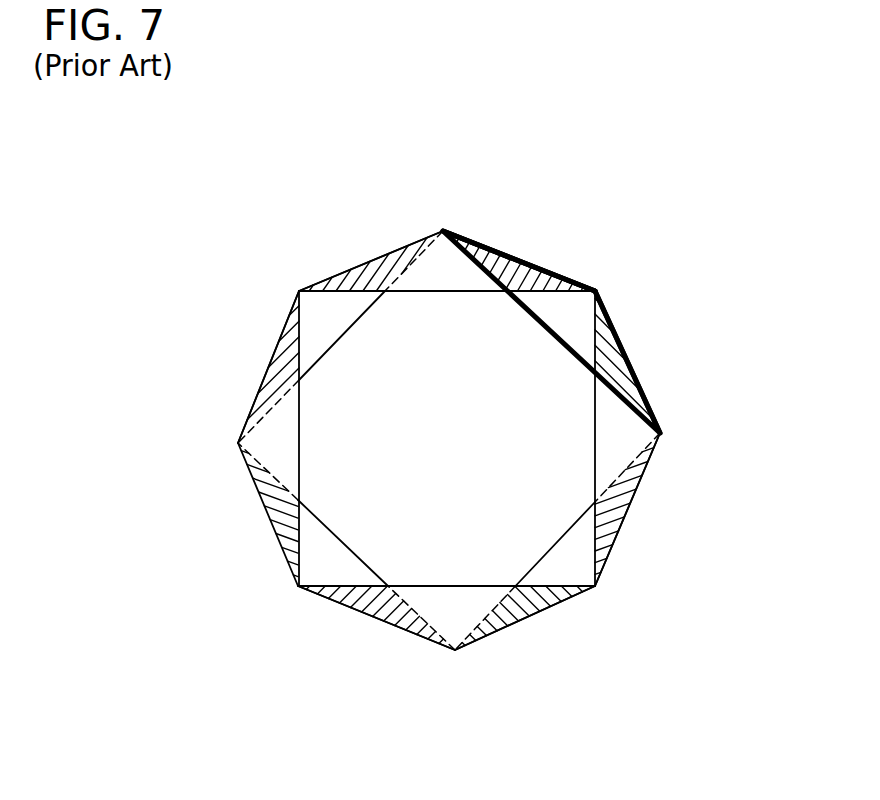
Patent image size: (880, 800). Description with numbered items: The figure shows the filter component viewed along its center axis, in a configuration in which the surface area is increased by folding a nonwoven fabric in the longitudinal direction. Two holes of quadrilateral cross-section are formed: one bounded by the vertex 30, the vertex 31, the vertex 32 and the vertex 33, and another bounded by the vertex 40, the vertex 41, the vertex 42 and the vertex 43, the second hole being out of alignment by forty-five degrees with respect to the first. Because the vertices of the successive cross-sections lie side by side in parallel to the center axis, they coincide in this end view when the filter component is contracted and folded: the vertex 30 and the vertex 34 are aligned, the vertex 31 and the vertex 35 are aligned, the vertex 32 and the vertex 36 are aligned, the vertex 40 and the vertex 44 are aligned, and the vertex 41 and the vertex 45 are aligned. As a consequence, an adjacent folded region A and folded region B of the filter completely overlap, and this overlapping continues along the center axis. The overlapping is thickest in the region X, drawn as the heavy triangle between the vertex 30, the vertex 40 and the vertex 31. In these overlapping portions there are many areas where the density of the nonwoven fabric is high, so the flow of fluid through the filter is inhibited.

The vertex 30 is at (443, 231).
The vertex 34 is at (443, 231).
The vertex 40 is at (595, 291).
The vertex 44 is at (595, 291).
The vertex 31 is at (660, 433).
The vertex 35 is at (660, 433).
The vertex 41 is at (595, 586).
The vertex 45 is at (595, 586).
The vertex 32 is at (455, 650).
The vertex 36 is at (455, 650).
The vertex 42 is at (298, 586).
The vertex 33 is at (238, 443).
The vertex 43 is at (299, 291).
The region X is at (538, 262).
The folded region A is at (618, 340).